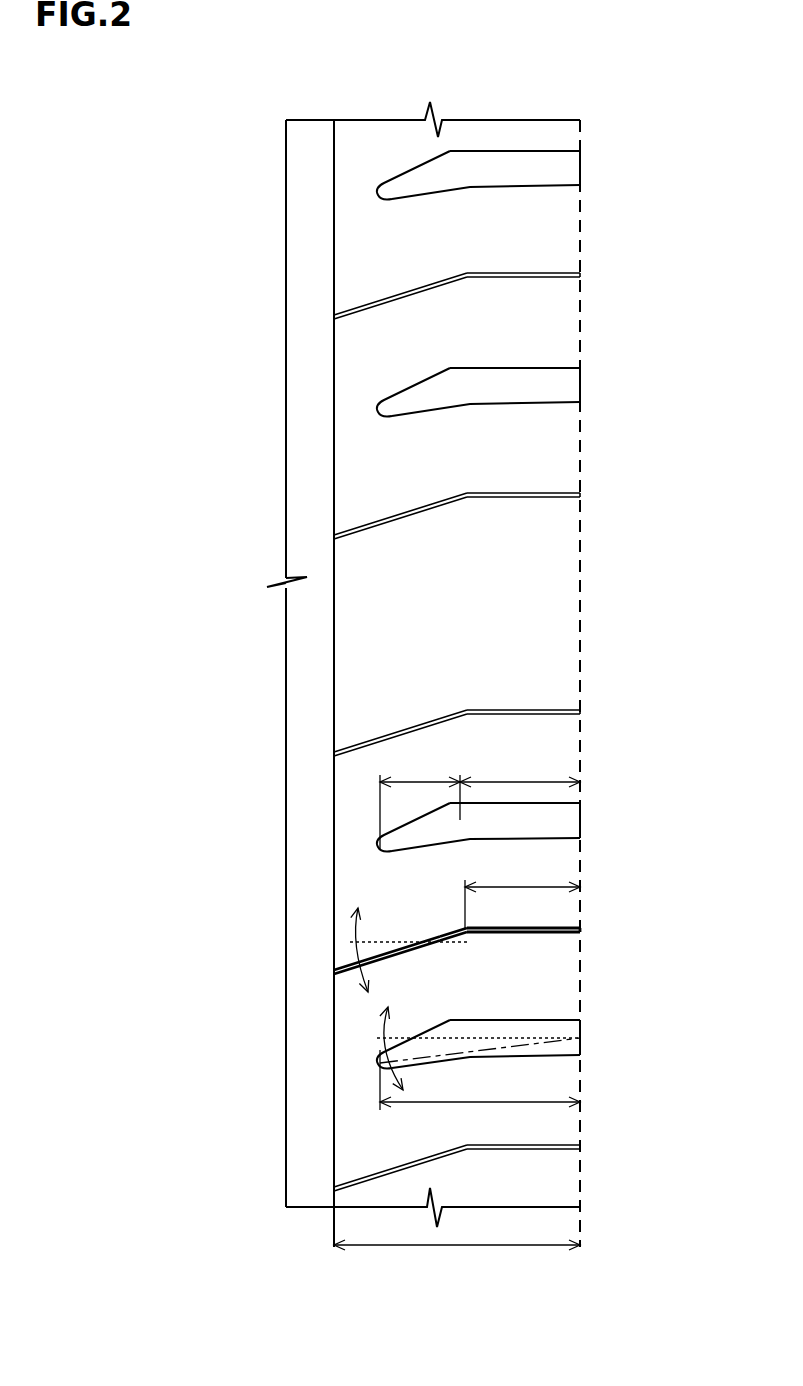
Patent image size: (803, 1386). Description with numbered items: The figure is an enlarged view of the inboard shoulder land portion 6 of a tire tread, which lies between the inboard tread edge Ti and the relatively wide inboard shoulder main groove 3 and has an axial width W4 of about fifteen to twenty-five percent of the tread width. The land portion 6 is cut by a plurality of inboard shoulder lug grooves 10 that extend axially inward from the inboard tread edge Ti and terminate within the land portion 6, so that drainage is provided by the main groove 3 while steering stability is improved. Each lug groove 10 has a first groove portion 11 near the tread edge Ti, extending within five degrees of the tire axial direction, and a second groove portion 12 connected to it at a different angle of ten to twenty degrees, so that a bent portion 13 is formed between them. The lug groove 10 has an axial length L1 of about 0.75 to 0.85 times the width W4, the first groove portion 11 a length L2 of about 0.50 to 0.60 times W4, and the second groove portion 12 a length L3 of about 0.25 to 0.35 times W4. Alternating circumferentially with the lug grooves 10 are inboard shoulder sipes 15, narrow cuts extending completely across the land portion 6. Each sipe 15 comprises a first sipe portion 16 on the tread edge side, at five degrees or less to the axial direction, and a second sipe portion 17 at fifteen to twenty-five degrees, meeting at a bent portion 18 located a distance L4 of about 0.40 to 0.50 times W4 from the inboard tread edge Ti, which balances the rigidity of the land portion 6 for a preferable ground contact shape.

The inboard shoulder main groove 3 is at (310, 168).
The inboard shoulder land portion 6 is at (472, 220).
The inboard shoulder lug groove 10 is at (467, 567).
The first groove portion 11 is at (533, 607).
The second groove portion 12 is at (417, 617).
The bent portion 13 is at (460, 390).
The inboard shoulder sipe 15 is at (467, 687).
The first sipe portion 16 is at (530, 273).
The second sipe portion 17 is at (405, 296).
The bent portion 18 is at (465, 276).
The inboard tread edge Ti is at (583, 192).
The length of inboard shoulder lug groove L1 is at (483, 1103).
The length of first groove portion L2 is at (520, 778).
The length of second groove portion L3 is at (413, 780).
The distance from inboard tread edge to bent portion L4 is at (527, 883).
The width of inboard shoulder land portion W4 is at (457, 1262).